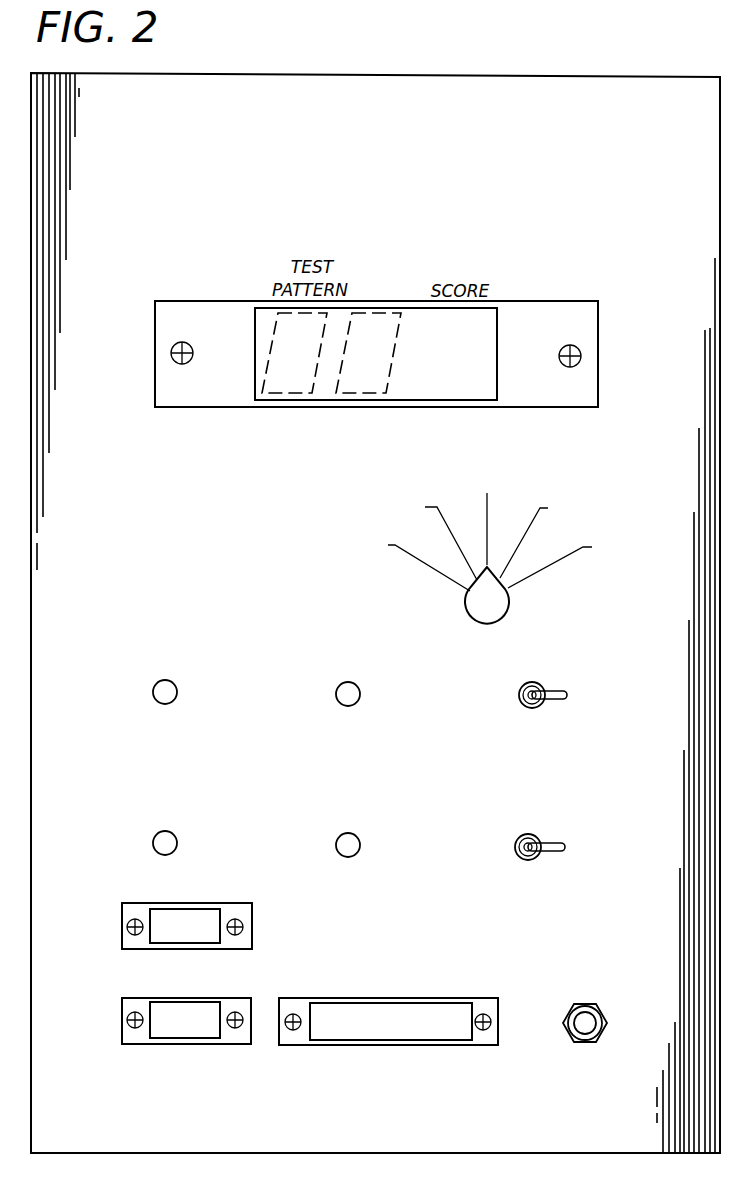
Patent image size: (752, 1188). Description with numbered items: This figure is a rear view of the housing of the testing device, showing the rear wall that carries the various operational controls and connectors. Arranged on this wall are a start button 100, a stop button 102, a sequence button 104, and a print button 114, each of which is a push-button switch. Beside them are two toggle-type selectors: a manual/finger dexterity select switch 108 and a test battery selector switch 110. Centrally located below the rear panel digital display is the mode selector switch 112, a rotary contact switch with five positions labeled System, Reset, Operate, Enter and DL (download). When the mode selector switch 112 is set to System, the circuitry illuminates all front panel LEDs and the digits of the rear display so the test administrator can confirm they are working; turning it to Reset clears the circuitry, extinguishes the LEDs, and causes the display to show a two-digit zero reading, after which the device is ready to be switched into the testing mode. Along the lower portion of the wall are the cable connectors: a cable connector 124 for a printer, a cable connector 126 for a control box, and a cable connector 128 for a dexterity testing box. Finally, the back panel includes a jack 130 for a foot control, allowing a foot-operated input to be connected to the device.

The start button 100 is at (172, 697).
The stop button 102 is at (172, 843).
The sequence button 104 is at (355, 700).
The manual/finger dexterity select switch 108 is at (560, 842).
The test battery selector switch 110 is at (557, 700).
The mode selector switch 112 is at (510, 602).
The print button 114 is at (356, 845).
The cable connector for a printer 124 is at (415, 1040).
The cable connector for a control box 126 is at (190, 1038).
The cable connector for a dexterity testing box 128 is at (240, 905).
The jack for a foot control 130 is at (603, 1010).